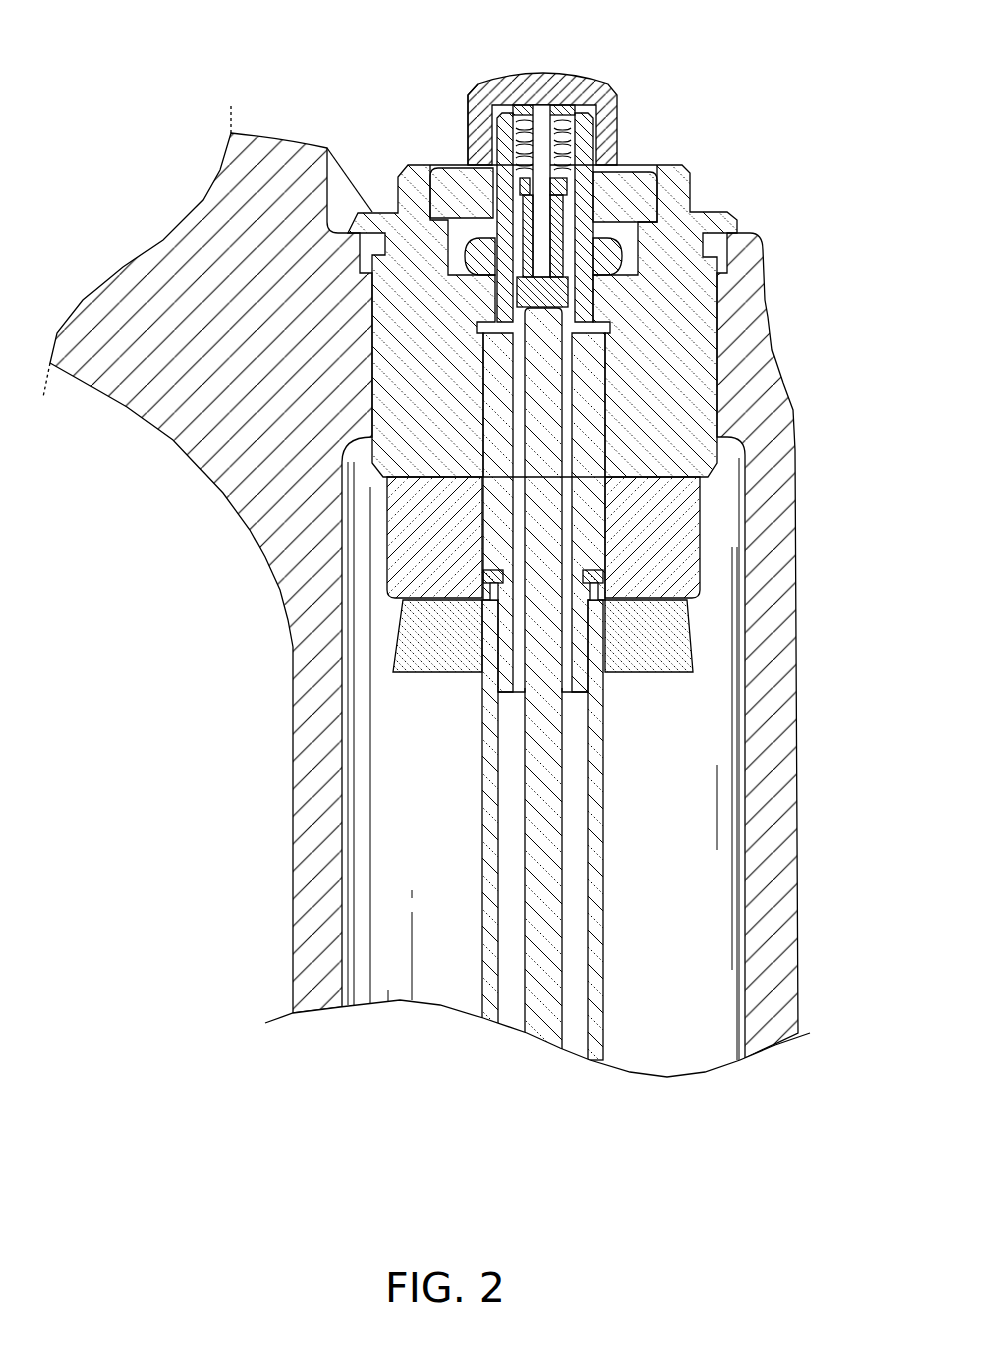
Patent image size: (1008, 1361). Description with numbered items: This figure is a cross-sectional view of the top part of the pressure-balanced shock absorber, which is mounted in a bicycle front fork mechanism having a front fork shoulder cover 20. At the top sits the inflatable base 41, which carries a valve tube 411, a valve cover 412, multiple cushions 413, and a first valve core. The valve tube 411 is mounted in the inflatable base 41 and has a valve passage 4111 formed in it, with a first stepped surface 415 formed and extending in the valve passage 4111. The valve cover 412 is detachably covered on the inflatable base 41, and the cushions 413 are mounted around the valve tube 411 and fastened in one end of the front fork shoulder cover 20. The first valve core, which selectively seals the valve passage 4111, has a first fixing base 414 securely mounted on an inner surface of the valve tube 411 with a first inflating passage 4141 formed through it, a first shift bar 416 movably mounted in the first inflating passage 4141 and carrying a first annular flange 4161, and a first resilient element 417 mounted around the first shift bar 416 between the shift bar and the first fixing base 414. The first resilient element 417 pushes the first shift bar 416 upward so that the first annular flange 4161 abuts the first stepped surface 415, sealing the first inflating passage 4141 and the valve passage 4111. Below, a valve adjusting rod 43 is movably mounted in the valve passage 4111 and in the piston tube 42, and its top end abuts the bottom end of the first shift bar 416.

The front fork shoulder cover 20 is at (243, 552).
The inflatable base 41 is at (710, 208).
The valve tube 411 is at (607, 332).
The valve passage 4111 is at (600, 385).
The valve cover 412 is at (503, 77).
The cushions 413 is at (687, 510).
The first fixing base 414 is at (556, 176).
The first inflating passage 4141 is at (520, 178).
The first stepped surface 415 is at (565, 270).
The first shift bar 416 is at (547, 112).
The first annular flange 4161 is at (465, 243).
The first resilient element 417 is at (470, 97).
The piston tube 42 is at (605, 740).
The valve adjusting rod 43 is at (557, 785).